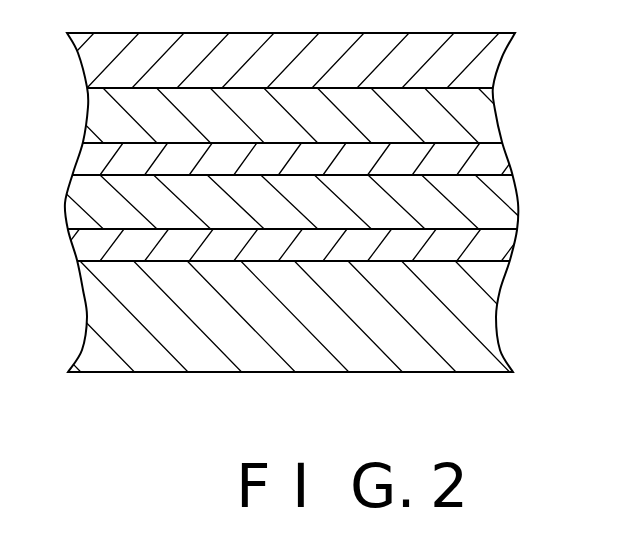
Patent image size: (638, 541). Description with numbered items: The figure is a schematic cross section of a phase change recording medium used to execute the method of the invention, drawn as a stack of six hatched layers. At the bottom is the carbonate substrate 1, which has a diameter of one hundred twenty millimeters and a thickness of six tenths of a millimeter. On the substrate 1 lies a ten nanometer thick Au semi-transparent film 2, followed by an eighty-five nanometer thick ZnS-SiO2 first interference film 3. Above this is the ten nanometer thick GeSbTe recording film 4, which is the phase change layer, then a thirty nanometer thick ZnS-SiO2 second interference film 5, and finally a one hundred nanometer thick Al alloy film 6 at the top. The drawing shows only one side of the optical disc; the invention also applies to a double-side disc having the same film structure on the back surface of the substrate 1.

The carbonate substrate 1 is at (483, 310).
The Au semi-transparent film 2 is at (495, 243).
The ZnS-SiO2 first interference film 3 is at (492, 196).
The GeSbTe recording film 4 is at (498, 157).
The ZnS-SiO2 second interference film 5 is at (485, 111).
The Al alloy film 6 is at (492, 60).